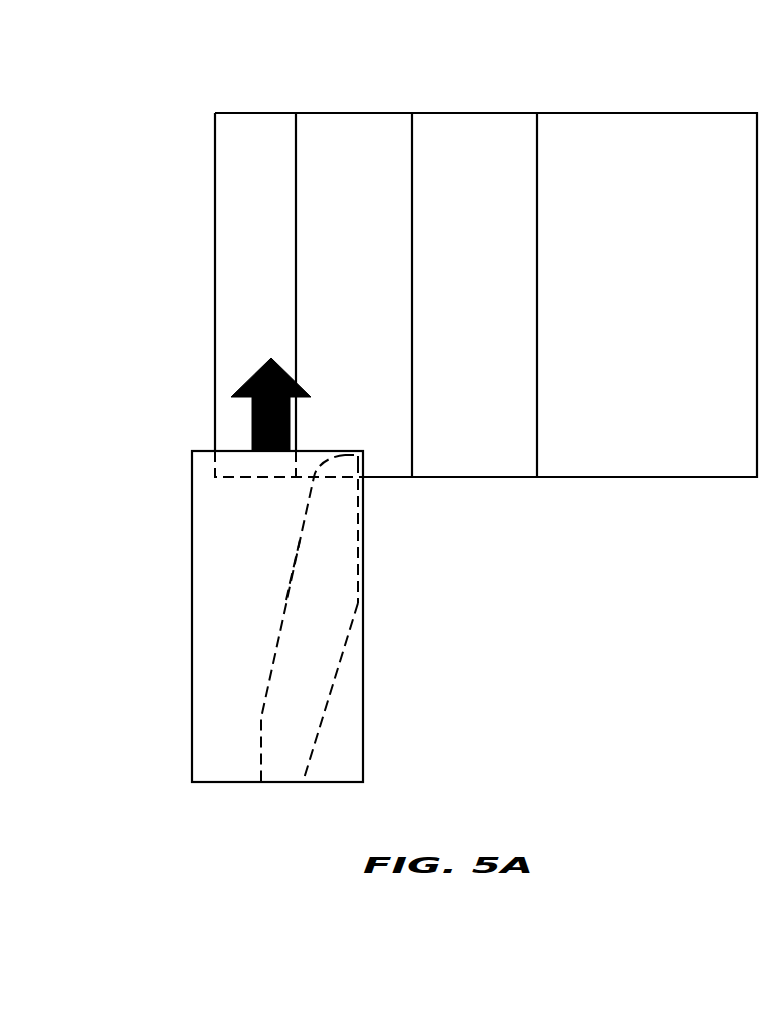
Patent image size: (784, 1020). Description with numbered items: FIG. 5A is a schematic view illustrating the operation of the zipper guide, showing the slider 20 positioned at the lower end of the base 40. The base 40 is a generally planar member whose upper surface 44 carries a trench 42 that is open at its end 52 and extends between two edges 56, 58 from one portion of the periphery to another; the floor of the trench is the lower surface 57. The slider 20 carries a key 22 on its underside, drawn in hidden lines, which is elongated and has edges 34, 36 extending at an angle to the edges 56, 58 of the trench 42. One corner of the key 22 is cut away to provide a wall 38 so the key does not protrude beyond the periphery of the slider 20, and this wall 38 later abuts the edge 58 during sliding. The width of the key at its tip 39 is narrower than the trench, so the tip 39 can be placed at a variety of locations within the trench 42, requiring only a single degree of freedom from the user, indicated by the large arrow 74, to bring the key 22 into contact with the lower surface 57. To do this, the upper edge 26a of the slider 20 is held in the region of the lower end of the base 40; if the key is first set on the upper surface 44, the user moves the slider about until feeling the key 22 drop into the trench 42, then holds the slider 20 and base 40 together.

The slider 20 is at (338, 755).
The key 22 is at (326, 622).
The upper edge 26a is at (203, 450).
The edge 34 is at (336, 692).
The edge 36 is at (273, 652).
The wall 38 is at (365, 570).
The tip 39 is at (343, 453).
The base 40 is at (628, 452).
The trench 42 is at (353, 133).
The upper surface 44 is at (267, 252).
The end 52 is at (393, 470).
The edge 56 is at (296, 227).
The lower surface 57 is at (369, 306).
The edge 58 is at (412, 177).
The large arrow 74 is at (262, 372).